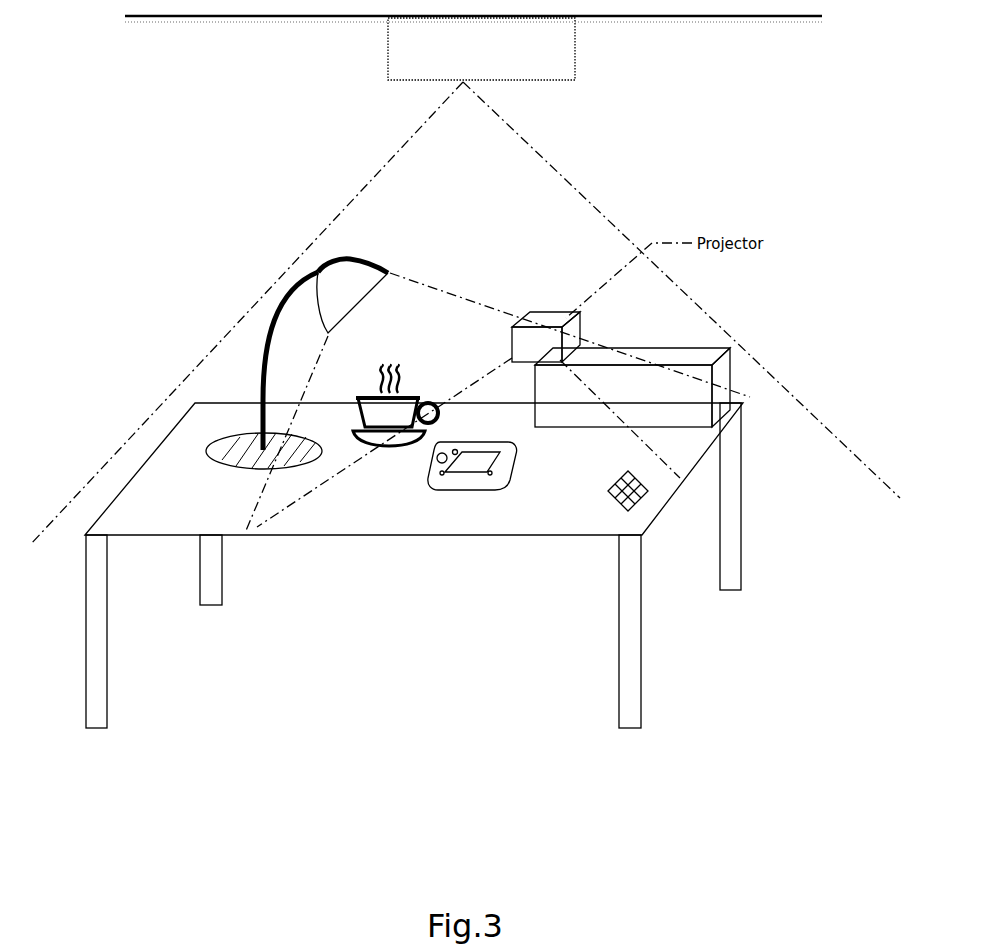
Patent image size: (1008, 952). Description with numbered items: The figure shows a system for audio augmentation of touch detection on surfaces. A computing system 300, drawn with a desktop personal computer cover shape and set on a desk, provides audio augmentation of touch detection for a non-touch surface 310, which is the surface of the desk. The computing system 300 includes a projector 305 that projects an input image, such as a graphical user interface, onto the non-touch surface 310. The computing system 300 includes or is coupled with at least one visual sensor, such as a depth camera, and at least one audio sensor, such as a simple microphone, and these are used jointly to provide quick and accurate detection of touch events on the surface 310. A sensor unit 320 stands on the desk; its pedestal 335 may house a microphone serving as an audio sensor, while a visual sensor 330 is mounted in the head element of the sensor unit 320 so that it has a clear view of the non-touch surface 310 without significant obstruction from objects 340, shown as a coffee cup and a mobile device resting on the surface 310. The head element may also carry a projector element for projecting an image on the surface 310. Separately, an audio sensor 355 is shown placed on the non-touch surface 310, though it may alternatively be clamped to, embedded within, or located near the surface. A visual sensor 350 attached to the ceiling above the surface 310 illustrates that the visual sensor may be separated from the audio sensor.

The computing system 300 is at (632, 387).
The projector 305 is at (546, 337).
The non-touch surface 310 is at (405, 545).
The sensor unit 320 is at (207, 354).
The visual sensor 330 is at (353, 260).
The pedestal 335 is at (216, 444).
The objects 340 is at (397, 363).
The visual sensor 350 is at (481, 49).
The audio sensor 355 is at (606, 512).